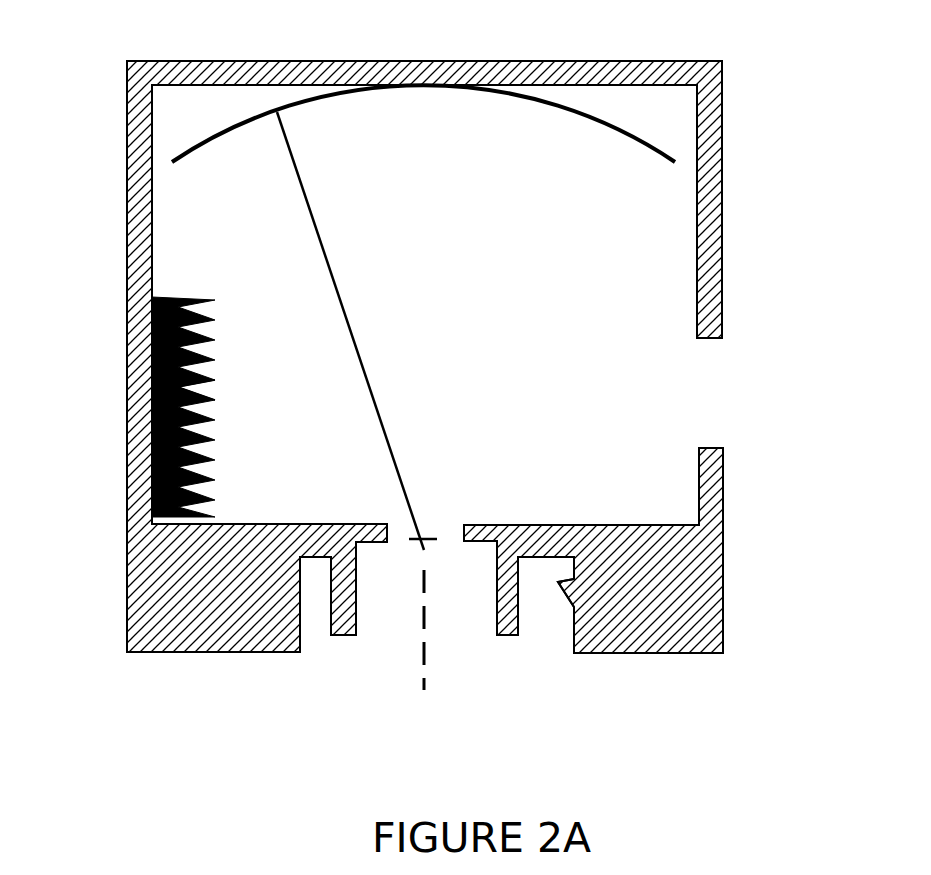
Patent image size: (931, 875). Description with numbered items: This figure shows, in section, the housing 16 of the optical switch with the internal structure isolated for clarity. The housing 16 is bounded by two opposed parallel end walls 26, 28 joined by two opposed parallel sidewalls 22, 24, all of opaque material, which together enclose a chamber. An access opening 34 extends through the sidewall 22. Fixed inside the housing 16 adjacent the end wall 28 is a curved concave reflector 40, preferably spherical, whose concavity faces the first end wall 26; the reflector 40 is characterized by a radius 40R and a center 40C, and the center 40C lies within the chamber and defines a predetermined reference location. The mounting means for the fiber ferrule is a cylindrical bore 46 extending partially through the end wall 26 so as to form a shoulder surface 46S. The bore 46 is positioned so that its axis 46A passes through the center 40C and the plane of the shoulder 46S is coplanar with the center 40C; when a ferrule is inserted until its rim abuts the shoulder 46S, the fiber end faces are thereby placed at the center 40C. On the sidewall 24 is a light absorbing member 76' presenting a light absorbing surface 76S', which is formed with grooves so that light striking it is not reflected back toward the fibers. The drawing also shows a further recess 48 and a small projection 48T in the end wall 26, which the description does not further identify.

The housing 16 is at (733, 42).
The end wall 28 is at (591, 61).
The sidewall 22 is at (722, 218).
The access opening 34 is at (708, 340).
The sidewall 24 is at (127, 320).
The end wall 26 is at (667, 653).
The curved concave reflector 40 is at (568, 117).
The radius 40R is at (352, 318).
The center 40C is at (430, 530).
The axis 46A is at (427, 655).
The shoulder surface 46S is at (383, 542).
The cylindrical bore 46 is at (497, 583).
The slot 48 is at (574, 630).
The tooth in slot 48T is at (563, 585).
The spring 76' is at (189, 382).
The light absorbing surface 76S' is at (233, 380).